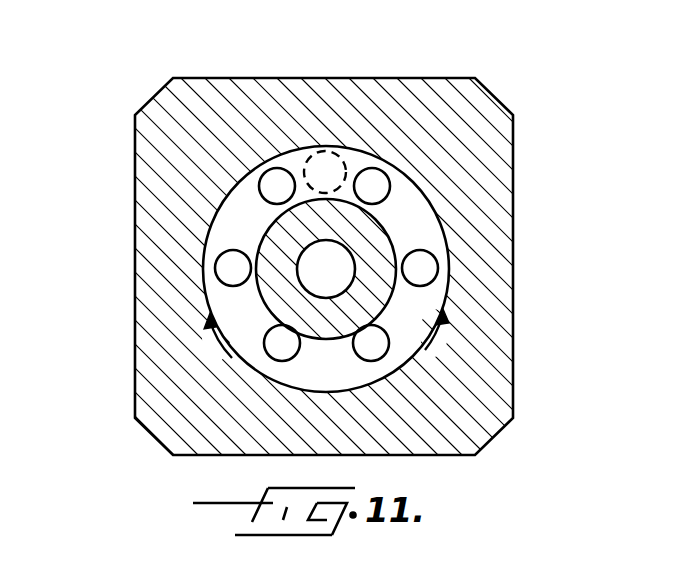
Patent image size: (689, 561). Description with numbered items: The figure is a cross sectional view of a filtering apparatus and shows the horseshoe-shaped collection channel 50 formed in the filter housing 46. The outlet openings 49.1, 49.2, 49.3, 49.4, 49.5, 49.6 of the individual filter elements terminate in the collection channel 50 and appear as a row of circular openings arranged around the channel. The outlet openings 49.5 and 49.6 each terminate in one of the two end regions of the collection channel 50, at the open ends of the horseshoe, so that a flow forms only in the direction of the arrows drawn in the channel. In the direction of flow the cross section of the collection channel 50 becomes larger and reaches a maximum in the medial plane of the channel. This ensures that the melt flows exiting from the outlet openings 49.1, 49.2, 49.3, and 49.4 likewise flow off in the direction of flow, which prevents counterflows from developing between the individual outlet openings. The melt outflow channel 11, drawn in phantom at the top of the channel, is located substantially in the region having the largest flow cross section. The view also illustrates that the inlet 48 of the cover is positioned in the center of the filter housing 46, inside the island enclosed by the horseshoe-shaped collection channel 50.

The melt outflow channel 11 is at (333, 150).
The filter housing 46 is at (495, 213).
The inlet 48 is at (330, 287).
The collection channel 50 is at (223, 225).
The outlet opening 49.1 is at (226, 272).
The outlet opening 49.2 is at (432, 272).
The outlet opening 49.3 is at (268, 183).
The outlet opening 49.4 is at (382, 185).
The outlet opening 49.5 is at (282, 348).
The outlet opening 49.6 is at (376, 346).